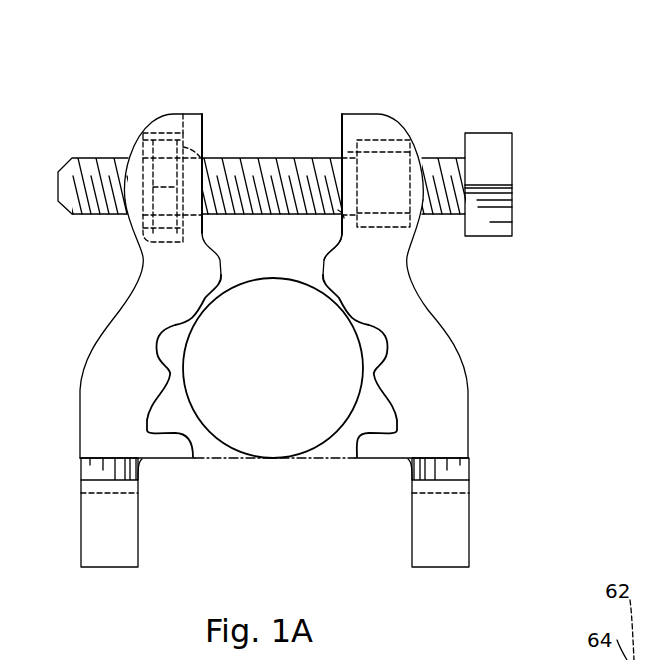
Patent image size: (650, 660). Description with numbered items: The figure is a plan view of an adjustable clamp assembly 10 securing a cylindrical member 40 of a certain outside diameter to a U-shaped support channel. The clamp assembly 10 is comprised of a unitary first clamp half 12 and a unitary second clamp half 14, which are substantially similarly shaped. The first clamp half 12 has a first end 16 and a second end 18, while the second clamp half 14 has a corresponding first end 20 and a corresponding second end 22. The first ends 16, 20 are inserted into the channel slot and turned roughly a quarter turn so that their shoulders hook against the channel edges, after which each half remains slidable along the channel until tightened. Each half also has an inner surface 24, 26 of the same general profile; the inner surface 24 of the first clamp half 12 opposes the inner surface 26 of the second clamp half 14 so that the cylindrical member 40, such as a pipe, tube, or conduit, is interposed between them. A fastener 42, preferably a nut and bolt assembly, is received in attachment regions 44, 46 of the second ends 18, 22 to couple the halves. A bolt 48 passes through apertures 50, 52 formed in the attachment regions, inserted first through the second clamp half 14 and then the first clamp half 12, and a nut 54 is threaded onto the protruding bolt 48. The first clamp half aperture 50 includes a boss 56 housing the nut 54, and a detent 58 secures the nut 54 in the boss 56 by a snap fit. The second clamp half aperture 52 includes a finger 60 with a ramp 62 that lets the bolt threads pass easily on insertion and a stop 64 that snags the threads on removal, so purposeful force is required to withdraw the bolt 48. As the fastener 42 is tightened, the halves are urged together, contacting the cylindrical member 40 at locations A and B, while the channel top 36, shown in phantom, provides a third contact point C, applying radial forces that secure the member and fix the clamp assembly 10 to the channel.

The clamp assembly 10 is at (497, 72).
The first clamp half 12 is at (129, 401).
The second clamp half 14 is at (442, 401).
The first end 16 is at (111, 570).
The second end 18 is at (174, 113).
The first end 20 is at (450, 570).
The second end 22 is at (360, 113).
The inner surface 24 is at (158, 402).
The inner surface 26 is at (388, 338).
The channel top 36 is at (330, 459).
The cylindrical member 40 is at (237, 441).
The fastener 42 is at (513, 201).
The attachment region 44 is at (205, 116).
The attachment region 46 is at (341, 121).
The bolt 48 is at (490, 138).
The aperture 50 is at (207, 130).
The aperture 52 is at (386, 148).
The nut 54 is at (172, 244).
The boss 56 is at (132, 222).
The detent 58 is at (138, 135).
The finger 60 is at (343, 223).
The ramp 62 is at (357, 227).
The stop 64 is at (343, 216).